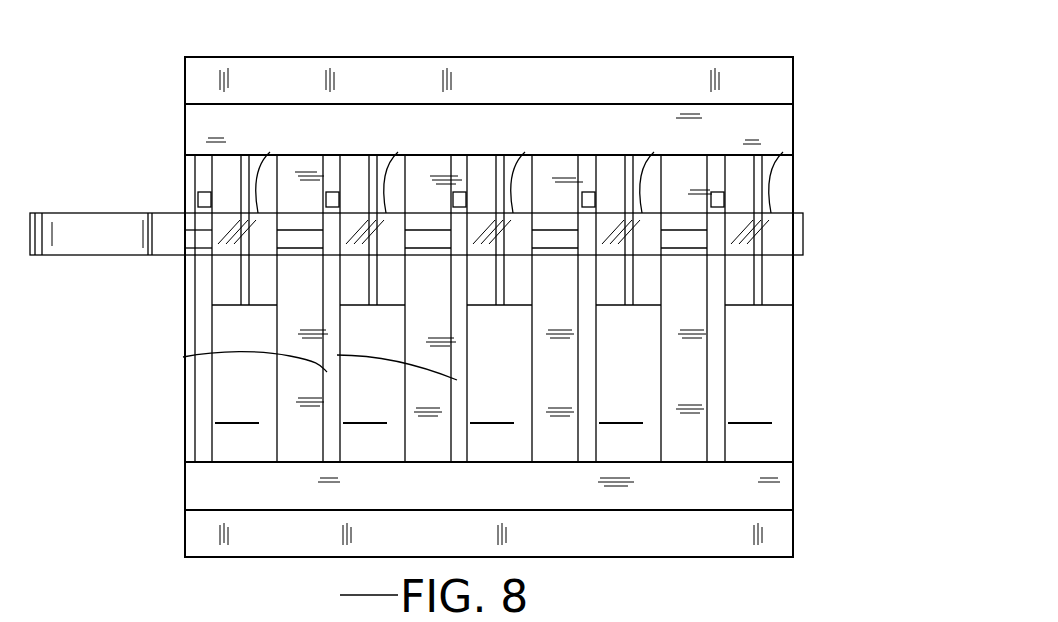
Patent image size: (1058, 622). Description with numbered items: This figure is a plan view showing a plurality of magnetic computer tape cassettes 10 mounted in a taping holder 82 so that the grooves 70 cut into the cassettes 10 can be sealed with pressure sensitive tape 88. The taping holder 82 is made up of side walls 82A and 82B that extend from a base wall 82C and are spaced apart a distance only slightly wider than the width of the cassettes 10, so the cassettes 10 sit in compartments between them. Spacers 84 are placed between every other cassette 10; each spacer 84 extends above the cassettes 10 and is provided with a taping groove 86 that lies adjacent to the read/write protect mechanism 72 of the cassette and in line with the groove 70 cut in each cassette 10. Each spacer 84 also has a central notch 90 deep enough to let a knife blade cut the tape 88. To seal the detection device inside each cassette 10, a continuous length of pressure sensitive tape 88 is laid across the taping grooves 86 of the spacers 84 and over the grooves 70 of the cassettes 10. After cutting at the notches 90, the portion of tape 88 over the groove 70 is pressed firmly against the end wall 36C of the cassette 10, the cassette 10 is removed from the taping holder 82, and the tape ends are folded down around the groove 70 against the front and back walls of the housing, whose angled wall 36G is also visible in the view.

The magnetic computer tape cassette 10 is at (200, 458).
The end wall 36C is at (176, 422).
The angled wall 36G is at (185, 357).
The groove 70 is at (203, 242).
The read/write protect mechanism 72 is at (203, 192).
The taping holder 82 is at (178, 91).
The side wall 82A is at (613, 485).
The side wall 82B is at (195, 130).
The base wall 82C is at (762, 83).
The spacer 84 is at (492, 308).
The taping groove 86 is at (270, 152).
The pressure sensitive tape 88 is at (86, 240).
The central notch 90 is at (243, 155).